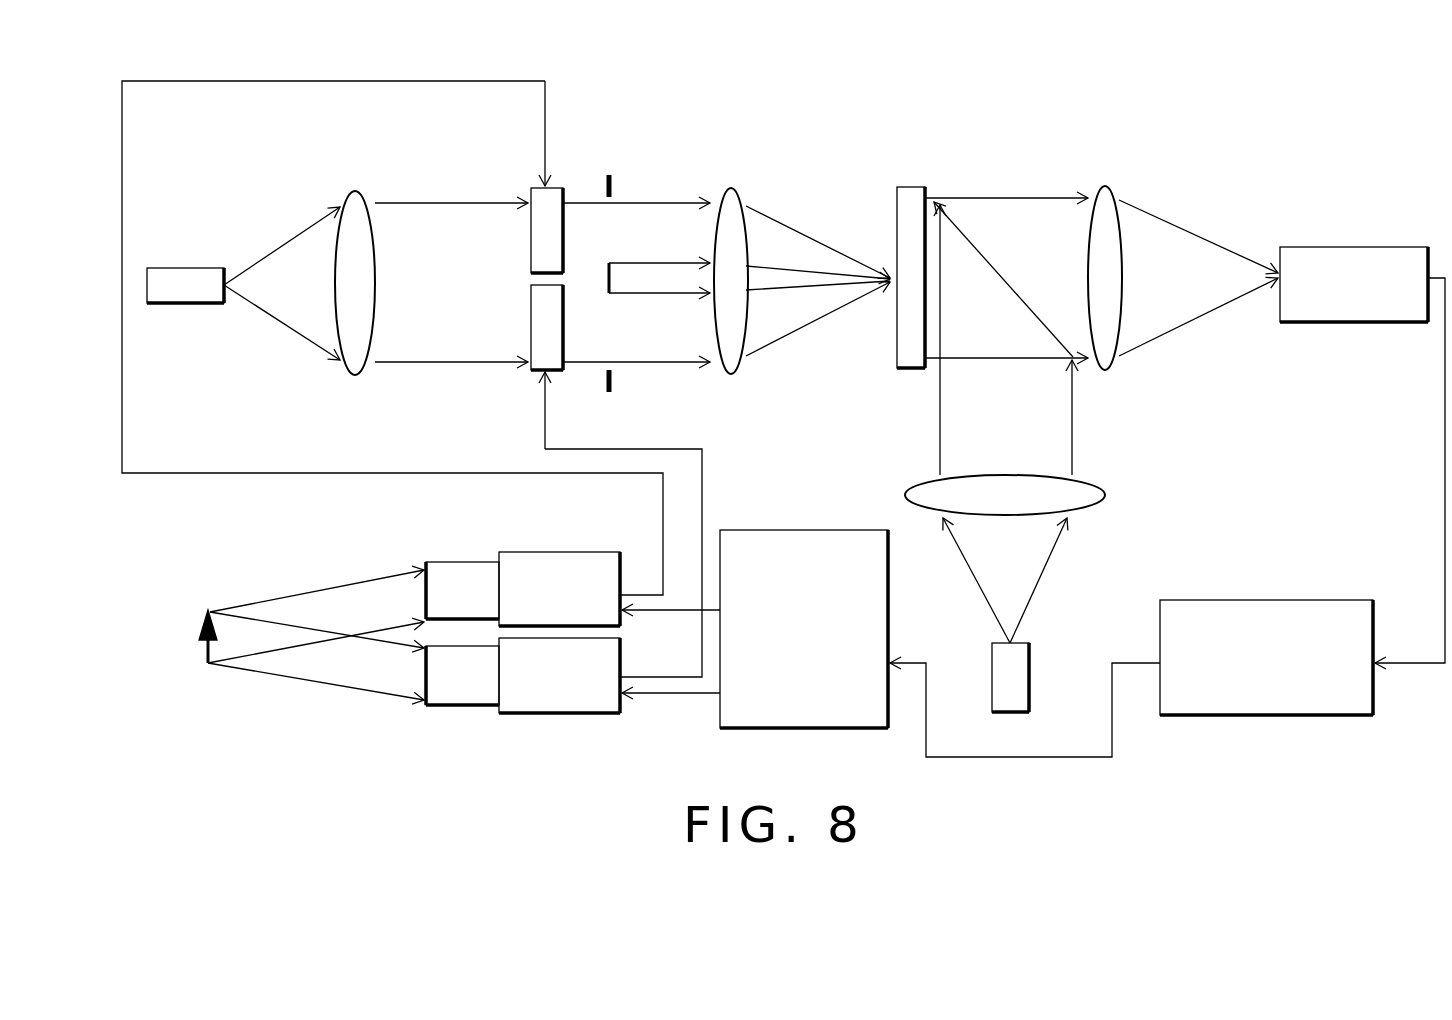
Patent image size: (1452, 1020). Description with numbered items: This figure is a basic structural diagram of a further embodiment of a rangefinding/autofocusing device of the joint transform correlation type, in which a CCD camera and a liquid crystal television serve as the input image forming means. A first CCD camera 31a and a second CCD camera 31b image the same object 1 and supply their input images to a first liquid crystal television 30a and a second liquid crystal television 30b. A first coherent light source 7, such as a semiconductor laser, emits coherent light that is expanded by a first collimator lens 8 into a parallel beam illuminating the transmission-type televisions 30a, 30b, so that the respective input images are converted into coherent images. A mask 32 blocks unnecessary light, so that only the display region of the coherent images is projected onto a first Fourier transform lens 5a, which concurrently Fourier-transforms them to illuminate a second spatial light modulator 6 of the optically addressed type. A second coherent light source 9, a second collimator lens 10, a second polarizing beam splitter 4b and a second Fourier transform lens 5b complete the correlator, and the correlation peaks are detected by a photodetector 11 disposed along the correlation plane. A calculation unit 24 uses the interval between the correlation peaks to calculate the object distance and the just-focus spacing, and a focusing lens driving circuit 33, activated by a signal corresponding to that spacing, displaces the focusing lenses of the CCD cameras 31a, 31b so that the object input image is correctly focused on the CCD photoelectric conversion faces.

The object 1 is at (200, 635).
The second polarizing beam splitter 4b is at (1020, 295).
The first Fourier transform lens 5a is at (728, 188).
The second Fourier transform lens 5b is at (1105, 187).
The second spatial light modulator 6 is at (908, 187).
The first coherent light source 7 is at (210, 268).
The first collimator lens 8 is at (367, 193).
The second coherent light source 9 is at (1029, 668).
The second collimator lens 10 is at (1106, 495).
The photodetector 11 is at (1356, 247).
The calculation unit 24 is at (1278, 600).
The first liquid crystal television 30a is at (530, 257).
The second liquid crystal television 30b is at (530, 303).
The first CCD camera 31a is at (585, 552).
The second CCD camera 31b is at (592, 713).
The mask 32 is at (609, 172).
The focusing lens driving circuit 33 is at (793, 530).